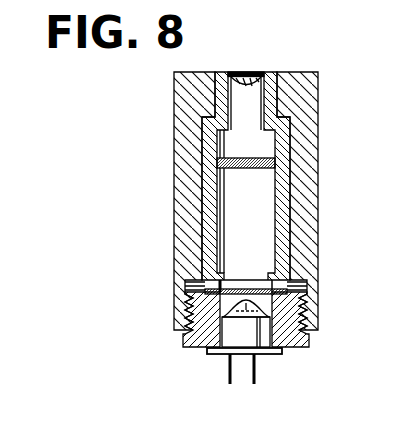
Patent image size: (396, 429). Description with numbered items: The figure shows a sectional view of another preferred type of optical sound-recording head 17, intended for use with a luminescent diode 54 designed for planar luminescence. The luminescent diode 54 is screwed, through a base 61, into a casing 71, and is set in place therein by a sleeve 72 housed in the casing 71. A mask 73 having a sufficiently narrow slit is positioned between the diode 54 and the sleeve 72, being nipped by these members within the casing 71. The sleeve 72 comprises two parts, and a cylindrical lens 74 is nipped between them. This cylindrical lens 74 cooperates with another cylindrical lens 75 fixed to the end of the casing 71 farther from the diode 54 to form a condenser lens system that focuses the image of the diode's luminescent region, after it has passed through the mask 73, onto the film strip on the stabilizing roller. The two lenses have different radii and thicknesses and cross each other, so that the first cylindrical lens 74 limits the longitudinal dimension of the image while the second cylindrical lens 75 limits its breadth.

The optical sound-recording head 17 is at (319, 107).
The casing 71 is at (306, 194).
The sleeve 72 is at (205, 172).
The mask 73 is at (250, 291).
The cylindrical lens 74 is at (245, 168).
The cylindrical lens 75 is at (248, 78).
The base 61 is at (193, 345).
The luminescent diode 54 is at (259, 350).